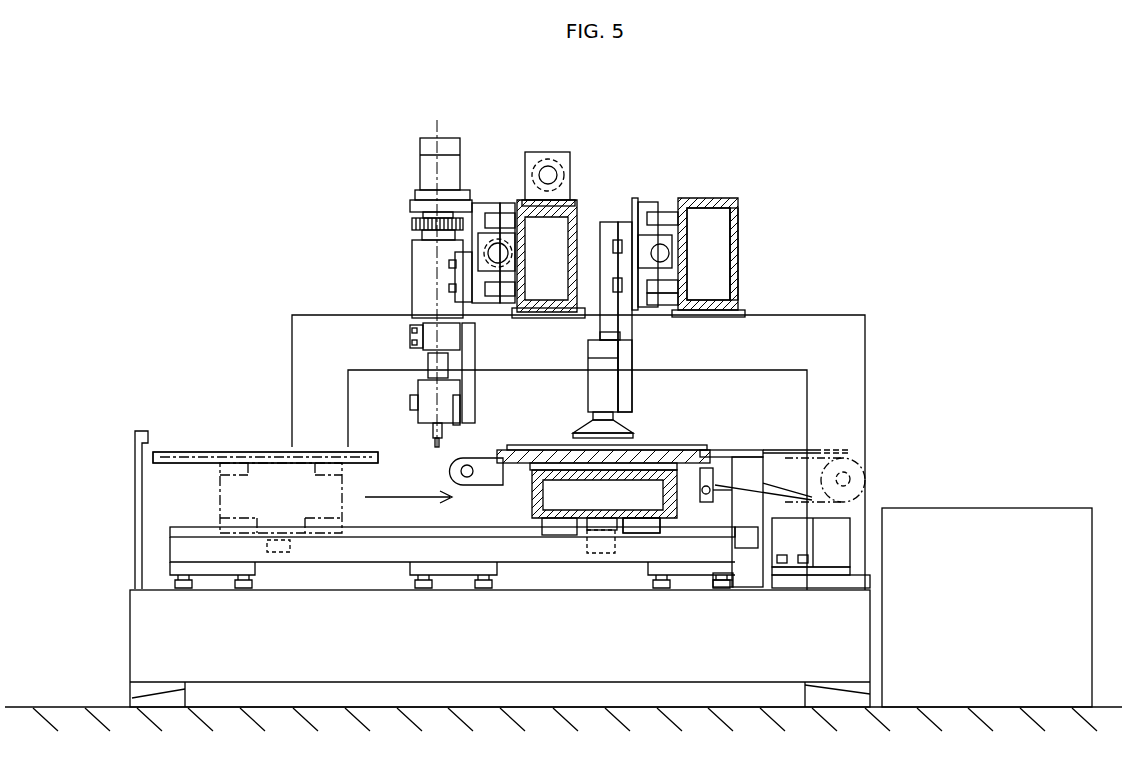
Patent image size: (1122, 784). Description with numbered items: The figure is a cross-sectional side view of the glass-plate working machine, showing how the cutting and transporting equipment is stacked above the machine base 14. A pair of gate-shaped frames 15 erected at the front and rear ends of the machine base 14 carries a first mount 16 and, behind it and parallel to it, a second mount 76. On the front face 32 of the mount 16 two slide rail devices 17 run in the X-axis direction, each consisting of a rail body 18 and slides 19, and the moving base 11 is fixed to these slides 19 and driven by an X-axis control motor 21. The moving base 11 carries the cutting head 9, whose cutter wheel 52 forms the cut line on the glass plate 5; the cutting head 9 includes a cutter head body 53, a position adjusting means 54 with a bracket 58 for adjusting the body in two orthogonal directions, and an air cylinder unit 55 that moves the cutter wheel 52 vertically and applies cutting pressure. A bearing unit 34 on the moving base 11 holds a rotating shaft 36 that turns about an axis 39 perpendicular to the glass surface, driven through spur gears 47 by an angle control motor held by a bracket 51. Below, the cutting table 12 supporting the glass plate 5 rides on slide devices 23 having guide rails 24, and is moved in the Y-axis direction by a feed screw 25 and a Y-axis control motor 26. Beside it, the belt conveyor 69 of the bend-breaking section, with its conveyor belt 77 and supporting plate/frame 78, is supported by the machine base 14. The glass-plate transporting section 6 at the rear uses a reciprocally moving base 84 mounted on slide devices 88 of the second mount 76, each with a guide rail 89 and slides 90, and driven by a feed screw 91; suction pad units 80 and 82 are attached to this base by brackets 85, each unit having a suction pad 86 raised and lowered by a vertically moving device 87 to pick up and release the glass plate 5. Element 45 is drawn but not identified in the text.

The glass plate 5 is at (650, 448).
The glass-plate transporting section 6 is at (648, 210).
The cutting head 9 is at (425, 432).
The moving base 11 is at (475, 203).
The cutting table 12 is at (700, 455).
The machine base 14 is at (400, 592).
The gate-shaped frame 15 is at (848, 316).
The mount 16 is at (575, 230).
The slide rail device 17 is at (493, 203).
The rail body 18 is at (508, 240).
The slide 19 is at (485, 213).
The X-axis control motor 21 is at (553, 158).
The slide device 23 is at (640, 567).
The guide rail 24 is at (515, 540).
The feed screw 25 is at (645, 533).
The Y-axis control motor 26 is at (795, 545).
The front face 32 is at (455, 262).
The bearing unit 34 is at (425, 300).
The rotating shaft 36 is at (421, 238).
The axis 39 is at (437, 455).
The motor 45 is at (430, 145).
The spur gear 47 is at (414, 224).
The bracket 51 is at (413, 205).
The cutter wheel 52 is at (440, 436).
The cutter head body 53 is at (440, 420).
The position adjusting means 54 is at (418, 408).
The air cylinder unit 55 is at (432, 372).
The bracket 58 is at (472, 410).
The belt conveyor 69 is at (780, 455).
The second mount 76 is at (728, 222).
The conveyor belt 77 is at (778, 447).
The supporting plate/frame 78 is at (860, 480).
The suction pad unit 80 is at (525, 305).
The suction pad unit 82 is at (590, 388).
The reciprocally moving base 84 is at (633, 212).
The bracket 85 is at (620, 332).
The suction pad 86 is at (590, 430).
The vertically moving device 87 is at (600, 375).
The slide device 88 is at (667, 298).
The guide rail 89 is at (690, 210).
The slide 90 is at (668, 215).
The feed screw 91 is at (690, 265).